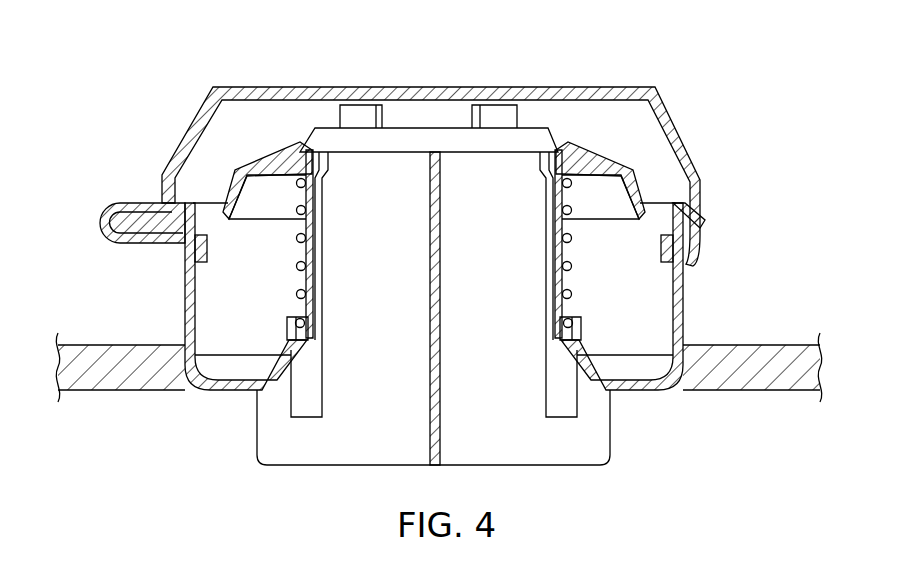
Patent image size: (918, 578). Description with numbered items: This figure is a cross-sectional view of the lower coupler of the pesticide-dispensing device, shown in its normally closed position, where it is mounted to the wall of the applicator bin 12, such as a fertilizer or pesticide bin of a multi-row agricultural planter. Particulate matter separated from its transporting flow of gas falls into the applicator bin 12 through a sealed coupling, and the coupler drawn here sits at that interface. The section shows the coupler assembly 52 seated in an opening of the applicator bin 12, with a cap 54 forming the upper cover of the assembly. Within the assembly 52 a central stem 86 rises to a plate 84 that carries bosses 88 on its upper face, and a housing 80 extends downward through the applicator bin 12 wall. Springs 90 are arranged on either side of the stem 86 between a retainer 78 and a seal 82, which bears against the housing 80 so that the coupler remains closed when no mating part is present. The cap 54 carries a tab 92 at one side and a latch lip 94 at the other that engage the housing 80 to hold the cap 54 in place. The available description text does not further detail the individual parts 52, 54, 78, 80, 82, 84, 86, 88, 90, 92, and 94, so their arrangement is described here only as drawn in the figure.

The applicator bin 12 is at (775, 343).
The vent valve assembly 52 is at (747, 184).
The cap 54 is at (206, 104).
The retainer 78 is at (562, 253).
The housing 80 is at (568, 343).
The seal 82 is at (552, 292).
The valve plate 84 is at (405, 121).
The stem 86 is at (442, 377).
The boss 88 is at (536, 122).
The spring 90 is at (298, 264).
The tab 92 is at (134, 190).
The latch lip 94 is at (705, 212).